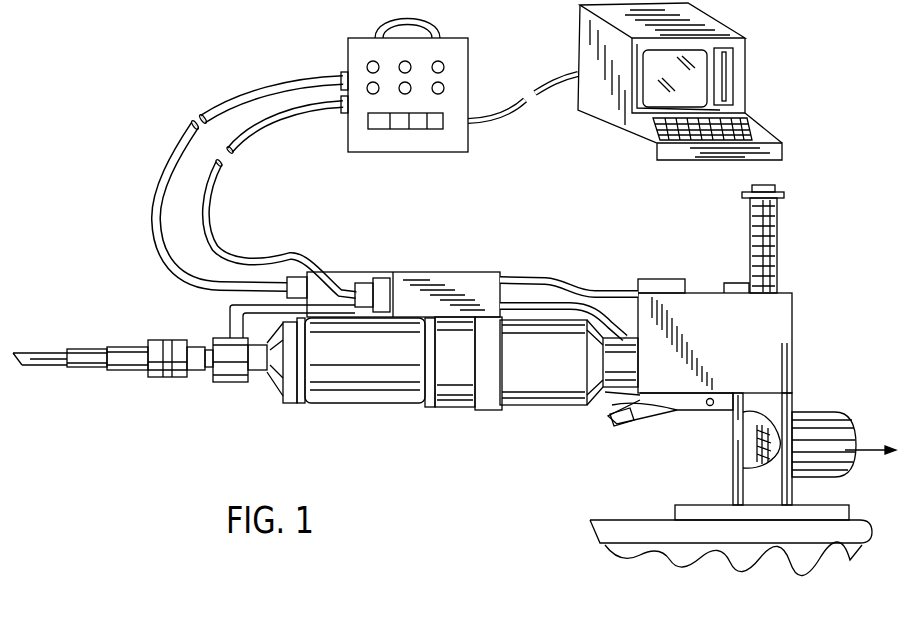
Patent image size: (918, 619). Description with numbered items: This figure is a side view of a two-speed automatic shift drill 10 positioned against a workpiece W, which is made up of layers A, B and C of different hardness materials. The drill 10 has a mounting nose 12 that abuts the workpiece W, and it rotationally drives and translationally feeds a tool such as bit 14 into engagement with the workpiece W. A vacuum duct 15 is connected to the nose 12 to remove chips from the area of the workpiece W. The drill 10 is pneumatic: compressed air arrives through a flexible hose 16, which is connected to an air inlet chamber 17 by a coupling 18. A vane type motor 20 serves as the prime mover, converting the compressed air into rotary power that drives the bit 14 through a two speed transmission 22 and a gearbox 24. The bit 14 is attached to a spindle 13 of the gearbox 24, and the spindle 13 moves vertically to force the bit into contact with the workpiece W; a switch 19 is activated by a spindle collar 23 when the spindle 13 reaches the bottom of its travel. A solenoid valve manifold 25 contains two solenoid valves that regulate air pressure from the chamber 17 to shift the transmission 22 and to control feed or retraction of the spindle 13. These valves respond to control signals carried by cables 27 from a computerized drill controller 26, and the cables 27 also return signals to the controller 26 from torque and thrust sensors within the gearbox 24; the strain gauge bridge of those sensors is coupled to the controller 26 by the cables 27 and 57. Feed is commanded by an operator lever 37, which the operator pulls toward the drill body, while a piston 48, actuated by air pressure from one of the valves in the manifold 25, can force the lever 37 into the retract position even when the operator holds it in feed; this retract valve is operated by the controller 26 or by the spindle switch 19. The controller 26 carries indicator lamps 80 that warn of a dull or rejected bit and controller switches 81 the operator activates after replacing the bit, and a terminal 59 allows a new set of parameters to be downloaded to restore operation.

The drill 10 is at (497, 432).
The mounting nose 12 is at (755, 493).
The spindle 13 is at (777, 243).
The bit 14 is at (760, 450).
The vacuum duct 15 is at (825, 413).
The flexible hose 16 is at (43, 360).
The air inlet chamber 17 is at (228, 382).
The coupling 18 is at (163, 377).
The switch 19 is at (729, 287).
The motor 20 is at (338, 403).
The two speed transmission 22 is at (453, 398).
The spindle collar 23 is at (745, 197).
The gearbox 24 is at (782, 317).
The solenoid valve manifold 25 is at (473, 280).
The computerized drill controller 26 is at (460, 52).
The cables 27 is at (153, 210).
The operator lever 37 is at (621, 427).
The piston 48 is at (615, 403).
The cable 57 is at (568, 280).
The terminal 59 is at (742, 75).
The indicator lamps 80 is at (367, 87).
The controller switches 81 is at (378, 125).
The workpiece W is at (653, 515).
The layer A is at (600, 520).
The layer B is at (607, 540).
The layer C is at (632, 562).